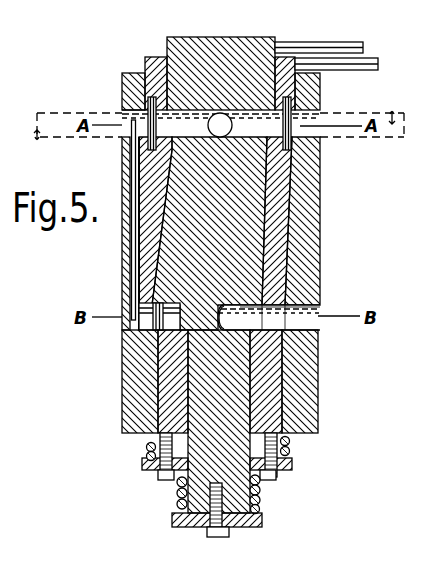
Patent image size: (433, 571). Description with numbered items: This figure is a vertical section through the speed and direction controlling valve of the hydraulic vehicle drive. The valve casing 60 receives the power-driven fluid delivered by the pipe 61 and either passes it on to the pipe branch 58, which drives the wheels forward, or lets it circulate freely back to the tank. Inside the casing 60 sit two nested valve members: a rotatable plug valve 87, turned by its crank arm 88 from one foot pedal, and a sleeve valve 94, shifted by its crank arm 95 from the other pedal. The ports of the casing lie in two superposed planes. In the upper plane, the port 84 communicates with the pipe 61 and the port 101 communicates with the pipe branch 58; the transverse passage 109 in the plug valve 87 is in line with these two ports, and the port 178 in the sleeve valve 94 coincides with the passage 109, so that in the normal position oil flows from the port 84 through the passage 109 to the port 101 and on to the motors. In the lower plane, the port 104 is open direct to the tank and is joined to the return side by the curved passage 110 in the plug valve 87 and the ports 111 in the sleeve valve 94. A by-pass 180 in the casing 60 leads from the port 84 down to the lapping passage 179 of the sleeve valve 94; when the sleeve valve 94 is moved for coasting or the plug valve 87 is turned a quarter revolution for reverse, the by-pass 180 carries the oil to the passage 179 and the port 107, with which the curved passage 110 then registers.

The pipe branch 58 is at (394, 113).
The valve casing 60 is at (129, 379).
The pipe 61 is at (39, 141).
The port 84 is at (123, 116).
The plug valve 87 is at (245, 50).
The crank arm 88 is at (342, 51).
The sleeve valve 94 is at (150, 64).
The crank arm 95 is at (379, 65).
The port 101 is at (316, 130).
The port 104 is at (313, 321).
The port 107 is at (181, 320).
The transverse passage 109 is at (188, 126).
The curved passage 110 is at (231, 307).
The ports 111 is at (300, 306).
The port 178 is at (148, 128).
The passage 179 is at (153, 320).
The by-pass 180 is at (133, 259).